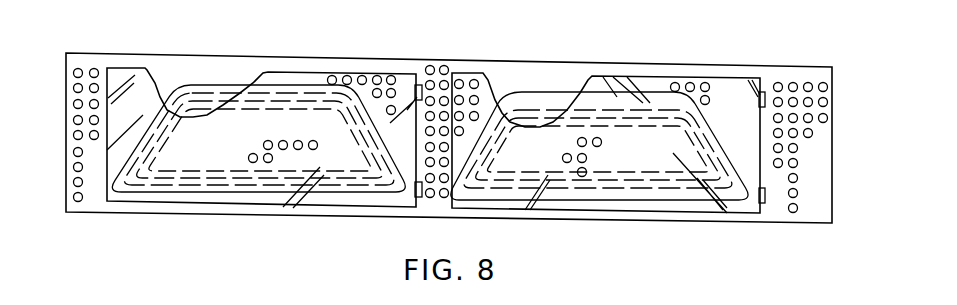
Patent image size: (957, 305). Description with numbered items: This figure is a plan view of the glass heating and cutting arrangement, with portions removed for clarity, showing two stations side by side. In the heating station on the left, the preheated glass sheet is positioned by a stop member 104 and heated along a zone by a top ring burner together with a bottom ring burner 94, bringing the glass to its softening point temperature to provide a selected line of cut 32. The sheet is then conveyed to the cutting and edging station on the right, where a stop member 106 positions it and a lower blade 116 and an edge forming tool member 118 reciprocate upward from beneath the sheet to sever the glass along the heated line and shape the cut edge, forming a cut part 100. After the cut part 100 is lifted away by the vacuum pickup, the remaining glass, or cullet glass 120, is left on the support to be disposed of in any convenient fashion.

The bottom ring burner 94 is at (207, 97).
The line of cut 32 is at (285, 102).
The stop member 104 is at (415, 90).
The edge forming tool member 118 is at (542, 117).
The lower blade 116 is at (558, 113).
The cullet glass 120 is at (738, 85).
The stop member 106 is at (765, 92).
The cut part 100 is at (608, 166).